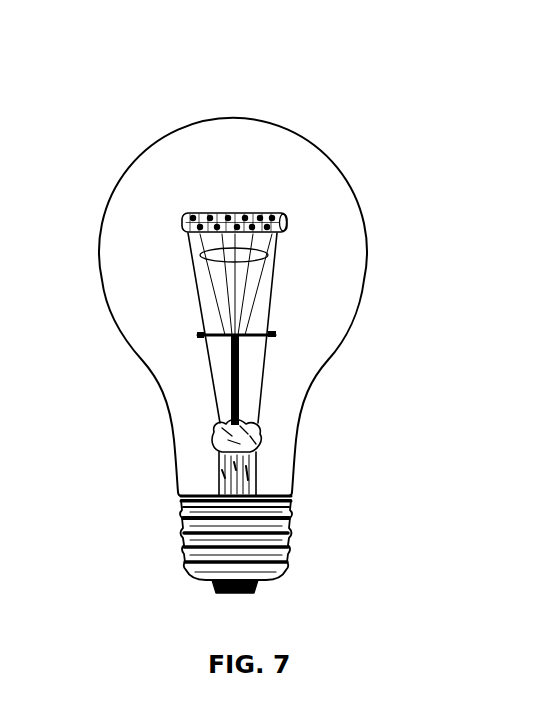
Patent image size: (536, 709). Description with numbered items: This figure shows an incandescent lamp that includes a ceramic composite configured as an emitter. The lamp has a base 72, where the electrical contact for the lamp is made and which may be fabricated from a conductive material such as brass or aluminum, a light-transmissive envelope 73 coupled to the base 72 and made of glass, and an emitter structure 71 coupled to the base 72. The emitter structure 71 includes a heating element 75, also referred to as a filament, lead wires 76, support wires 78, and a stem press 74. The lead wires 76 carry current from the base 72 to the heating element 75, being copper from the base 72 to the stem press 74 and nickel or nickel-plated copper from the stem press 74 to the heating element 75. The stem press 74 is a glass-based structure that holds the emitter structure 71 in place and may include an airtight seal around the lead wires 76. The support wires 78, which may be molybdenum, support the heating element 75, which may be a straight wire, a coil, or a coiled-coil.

The emitter structure 71 is at (304, 100).
The base 72 is at (283, 533).
The light-transmissive envelope 73 is at (360, 211).
The stem press 74 is at (253, 432).
The heating element 75 is at (195, 213).
The lead wires 76 is at (268, 353).
The support wires 78 is at (268, 252).